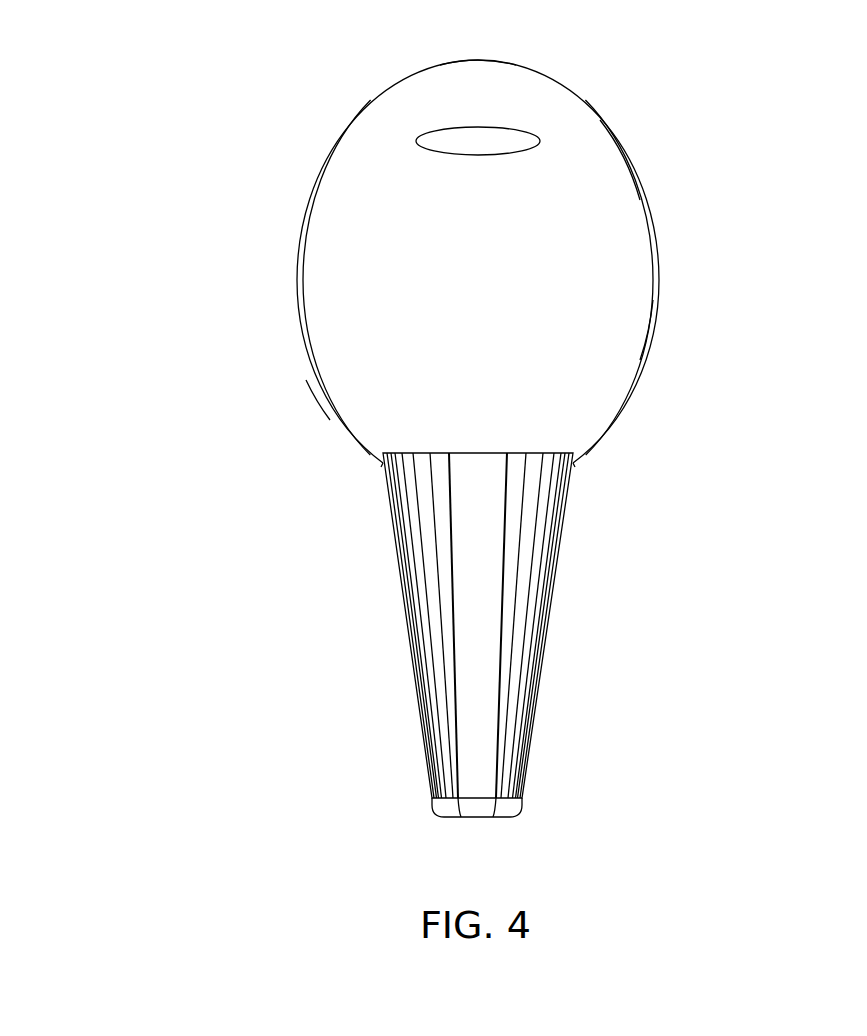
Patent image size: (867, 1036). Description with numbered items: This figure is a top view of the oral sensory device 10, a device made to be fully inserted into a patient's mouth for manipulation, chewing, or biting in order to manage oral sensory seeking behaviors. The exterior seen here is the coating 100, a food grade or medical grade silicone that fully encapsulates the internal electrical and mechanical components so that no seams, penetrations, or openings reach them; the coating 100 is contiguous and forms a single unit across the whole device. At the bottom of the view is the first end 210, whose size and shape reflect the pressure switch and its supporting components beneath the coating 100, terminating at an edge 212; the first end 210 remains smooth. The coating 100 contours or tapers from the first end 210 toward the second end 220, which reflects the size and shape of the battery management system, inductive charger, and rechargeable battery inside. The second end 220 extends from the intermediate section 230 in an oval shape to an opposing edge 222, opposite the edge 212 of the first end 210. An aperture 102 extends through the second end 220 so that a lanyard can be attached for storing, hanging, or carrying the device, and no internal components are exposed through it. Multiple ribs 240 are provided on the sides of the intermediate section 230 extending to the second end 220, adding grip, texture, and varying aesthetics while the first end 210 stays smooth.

The oral sensory device 10 is at (143, 65).
The coating 100 is at (585, 228).
The aperture 102 is at (412, 100).
The first end 210 is at (437, 623).
The edge 212 is at (479, 820).
The second end 220 is at (334, 210).
The opposing edge 222 is at (535, 70).
The intermediate section 230 is at (326, 415).
The ribs 240 is at (640, 358).